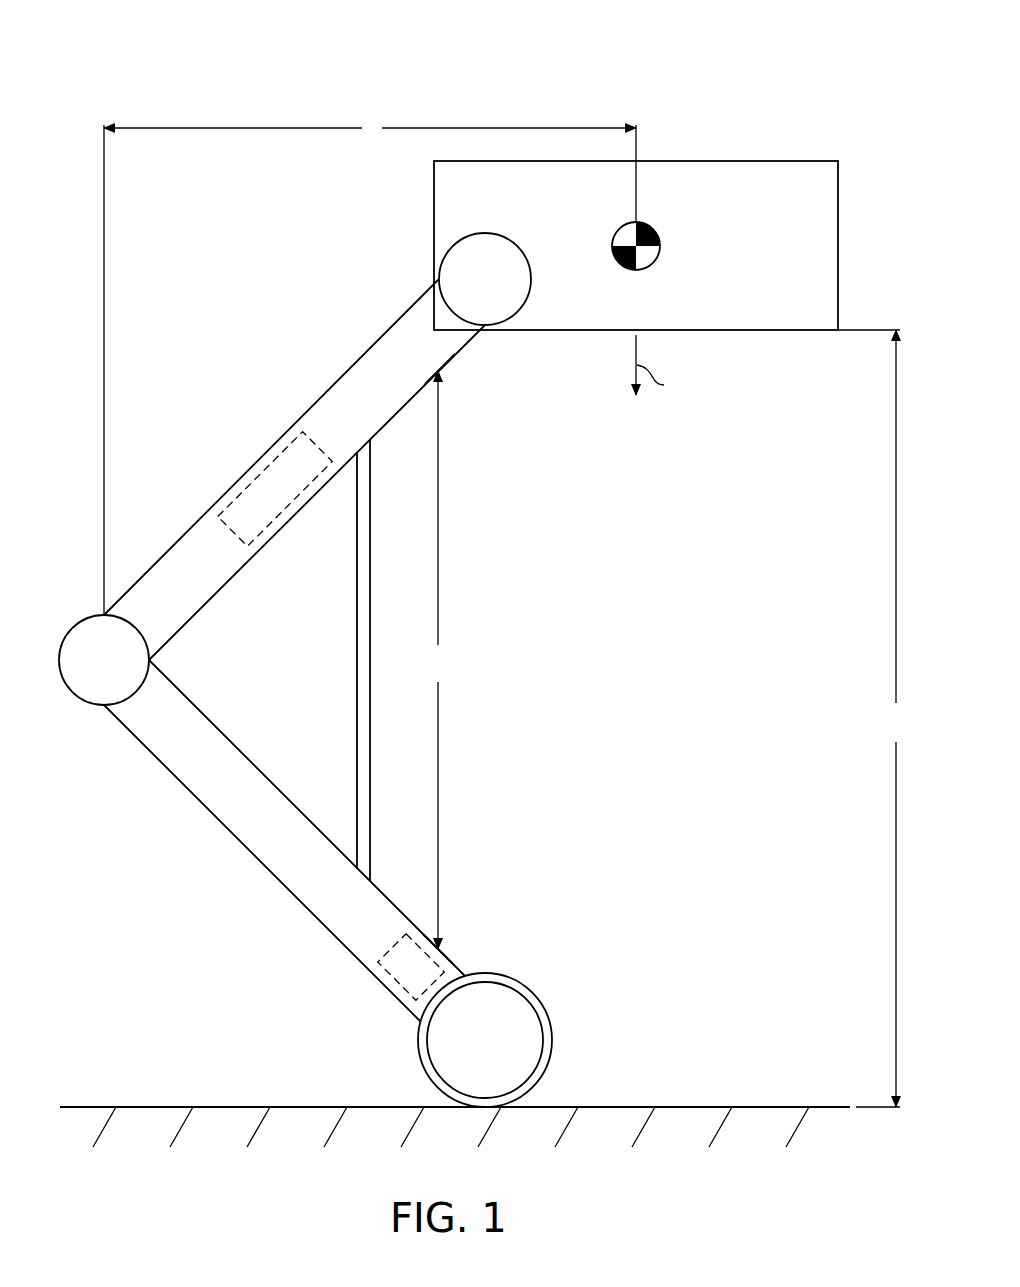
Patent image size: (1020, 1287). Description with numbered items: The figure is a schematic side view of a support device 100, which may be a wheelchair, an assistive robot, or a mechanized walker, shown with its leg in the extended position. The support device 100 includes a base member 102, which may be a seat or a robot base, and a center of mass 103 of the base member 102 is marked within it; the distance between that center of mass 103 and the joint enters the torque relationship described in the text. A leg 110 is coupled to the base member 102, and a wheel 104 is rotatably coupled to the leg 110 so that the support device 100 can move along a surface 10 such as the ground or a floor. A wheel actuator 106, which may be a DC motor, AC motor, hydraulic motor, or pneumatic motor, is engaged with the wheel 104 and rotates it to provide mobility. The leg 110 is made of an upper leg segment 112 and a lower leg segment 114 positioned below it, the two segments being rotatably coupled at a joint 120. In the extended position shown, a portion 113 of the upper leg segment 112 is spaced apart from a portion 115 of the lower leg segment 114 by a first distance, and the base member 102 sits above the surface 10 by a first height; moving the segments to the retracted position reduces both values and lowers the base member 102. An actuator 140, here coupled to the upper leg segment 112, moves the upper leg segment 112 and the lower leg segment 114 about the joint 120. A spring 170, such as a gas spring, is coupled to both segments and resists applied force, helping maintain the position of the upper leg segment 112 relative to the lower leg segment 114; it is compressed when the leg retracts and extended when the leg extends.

The support device 100 is at (818, 98).
The surface 10 is at (785, 1107).
The base member 102 is at (840, 205).
The center of mass 103 is at (661, 246).
The leg 110 is at (190, 422).
The upper leg segment 112 is at (375, 344).
The portion of the upper leg segment 113 is at (443, 373).
The lower leg segment 114 is at (172, 776).
The portion of the lower leg segment 115 is at (445, 945).
The joint 120 is at (72, 615).
The actuator 140 is at (273, 455).
The spring 170 is at (355, 653).
The wheel actuator 106 is at (382, 988).
The wheel 104 is at (548, 1012).